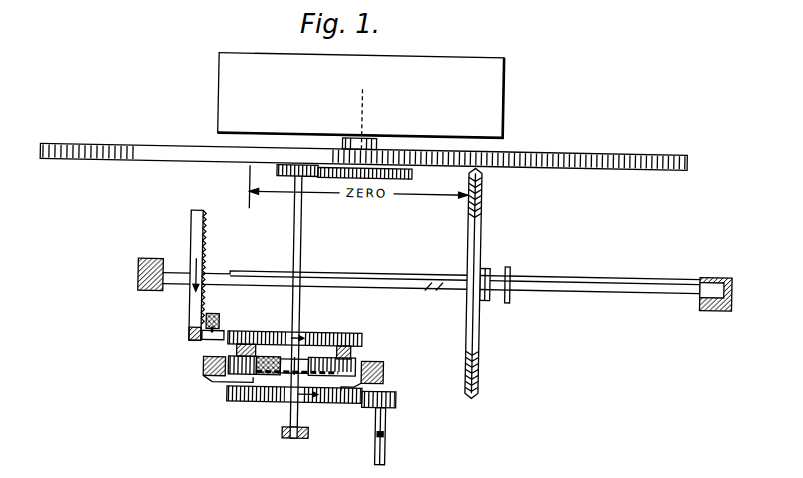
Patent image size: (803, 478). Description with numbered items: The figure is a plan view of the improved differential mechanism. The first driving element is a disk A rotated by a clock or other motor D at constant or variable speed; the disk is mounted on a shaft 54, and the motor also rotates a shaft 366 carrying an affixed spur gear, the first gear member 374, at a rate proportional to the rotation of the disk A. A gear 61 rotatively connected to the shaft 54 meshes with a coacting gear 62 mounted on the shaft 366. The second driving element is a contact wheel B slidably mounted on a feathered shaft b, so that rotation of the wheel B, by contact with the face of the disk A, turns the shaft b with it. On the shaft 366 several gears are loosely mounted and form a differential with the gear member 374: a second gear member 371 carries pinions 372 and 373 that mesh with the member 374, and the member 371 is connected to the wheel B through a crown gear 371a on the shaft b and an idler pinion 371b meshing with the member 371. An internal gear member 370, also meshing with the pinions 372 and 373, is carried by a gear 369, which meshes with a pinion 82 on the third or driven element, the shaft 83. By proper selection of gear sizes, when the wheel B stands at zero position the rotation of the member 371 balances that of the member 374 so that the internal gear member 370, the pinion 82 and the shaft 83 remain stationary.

The first driving element A is at (569, 150).
The second driving element B is at (482, 238).
The clock or motor D is at (360, 103).
The shaft b is at (208, 275).
The shaft 54 is at (372, 148).
The gear 61 is at (410, 173).
The coacting gear 62 is at (276, 173).
The shaft 366 is at (300, 257).
The gear 369 is at (320, 406).
The internal gear member 370 is at (388, 375).
The second gear member 371 is at (350, 334).
The crown gear 371a is at (190, 333).
The idler pinion 371b is at (207, 345).
The pinion 372 is at (241, 362).
The pinion 373 is at (363, 361).
The first gear member 374 is at (272, 378).
The pinion 82 is at (400, 401).
The driven element 83 is at (389, 443).